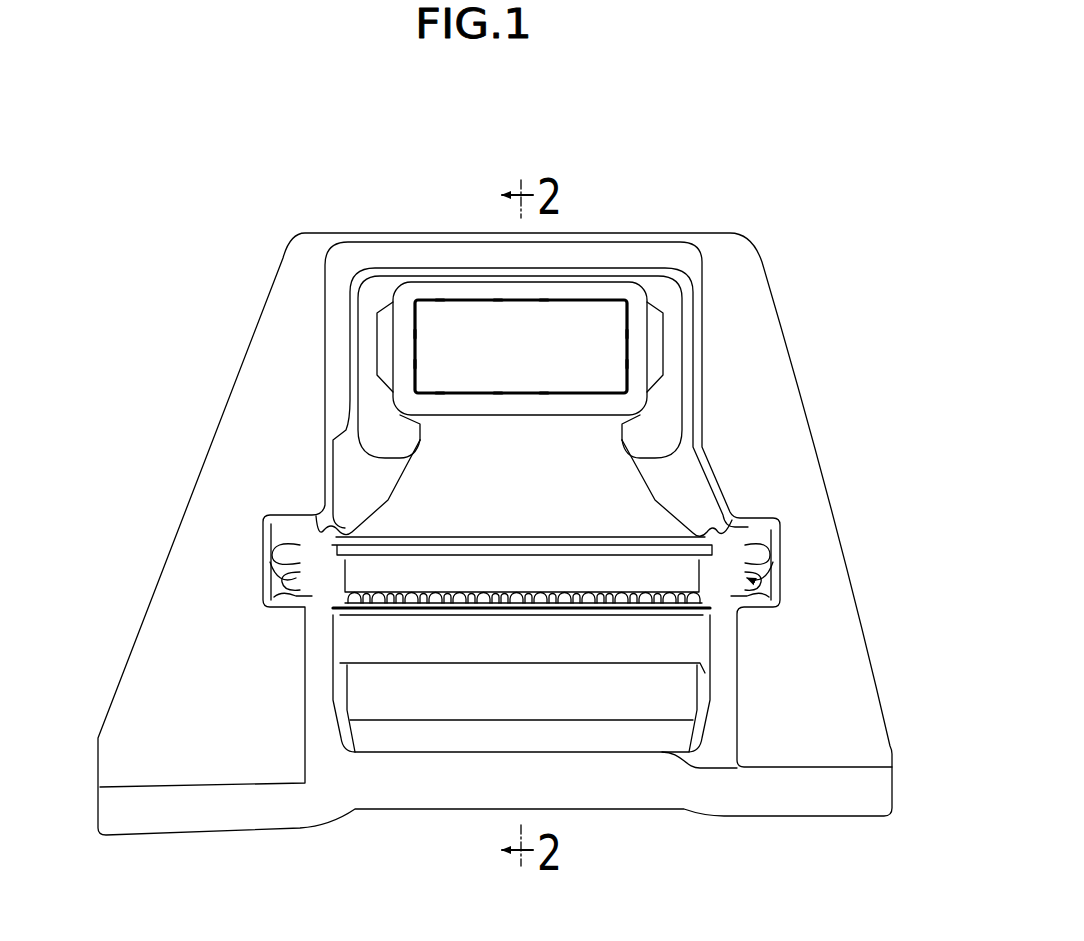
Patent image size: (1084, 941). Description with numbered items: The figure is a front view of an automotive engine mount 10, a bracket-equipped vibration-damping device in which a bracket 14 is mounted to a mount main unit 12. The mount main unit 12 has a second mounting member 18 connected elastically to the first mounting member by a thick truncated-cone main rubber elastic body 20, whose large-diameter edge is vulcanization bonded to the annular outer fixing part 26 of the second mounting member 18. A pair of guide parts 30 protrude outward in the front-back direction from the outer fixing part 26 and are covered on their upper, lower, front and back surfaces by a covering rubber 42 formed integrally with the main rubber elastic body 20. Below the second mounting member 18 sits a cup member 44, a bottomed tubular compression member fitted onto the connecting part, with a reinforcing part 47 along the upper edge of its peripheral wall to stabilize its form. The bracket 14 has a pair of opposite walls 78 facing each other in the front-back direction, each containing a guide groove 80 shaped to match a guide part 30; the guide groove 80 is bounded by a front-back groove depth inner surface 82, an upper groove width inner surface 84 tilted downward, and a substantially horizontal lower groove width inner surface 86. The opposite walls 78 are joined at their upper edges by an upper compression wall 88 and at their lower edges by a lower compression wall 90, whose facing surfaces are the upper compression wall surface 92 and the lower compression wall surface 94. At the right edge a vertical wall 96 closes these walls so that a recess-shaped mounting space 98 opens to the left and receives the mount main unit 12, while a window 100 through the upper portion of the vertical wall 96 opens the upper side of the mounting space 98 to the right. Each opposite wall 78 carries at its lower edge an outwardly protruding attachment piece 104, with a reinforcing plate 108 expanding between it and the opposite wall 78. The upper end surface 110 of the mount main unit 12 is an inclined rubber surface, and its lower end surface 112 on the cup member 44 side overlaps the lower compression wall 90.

The engine mount 10 is at (746, 197).
The mount main unit 12 is at (668, 472).
The bracket 14 is at (740, 832).
The second mounting member 18 is at (632, 541).
The main rubber elastic body 20 is at (440, 465).
The outer fixing part 26 is at (487, 573).
The guide part 30 is at (519, 560).
The covering rubber 42 is at (282, 531).
The cup member 44 is at (700, 685).
The reinforcing part 47 is at (675, 608).
The opposite wall 78 is at (340, 387).
The guide groove 80 is at (286, 590).
The front-back groove depth inner surface 82 is at (282, 557).
The upper groove width inner surface 84 is at (308, 540).
The lower groove width inner surface 86 is at (305, 598).
The upper compression wall 88 is at (477, 245).
The lower compression wall 90 is at (435, 790).
The upper compression wall surface 92 is at (578, 270).
The lower compression wall surface 94 is at (590, 740).
The vertical wall 96 is at (372, 483).
The mounting space 98 is at (340, 700).
The window 100 is at (690, 302).
The attachment piece 104 is at (190, 810).
The reinforcing plate 108 is at (245, 432).
The upper end surface 110 is at (440, 273).
The lower end surface 112 is at (737, 758).